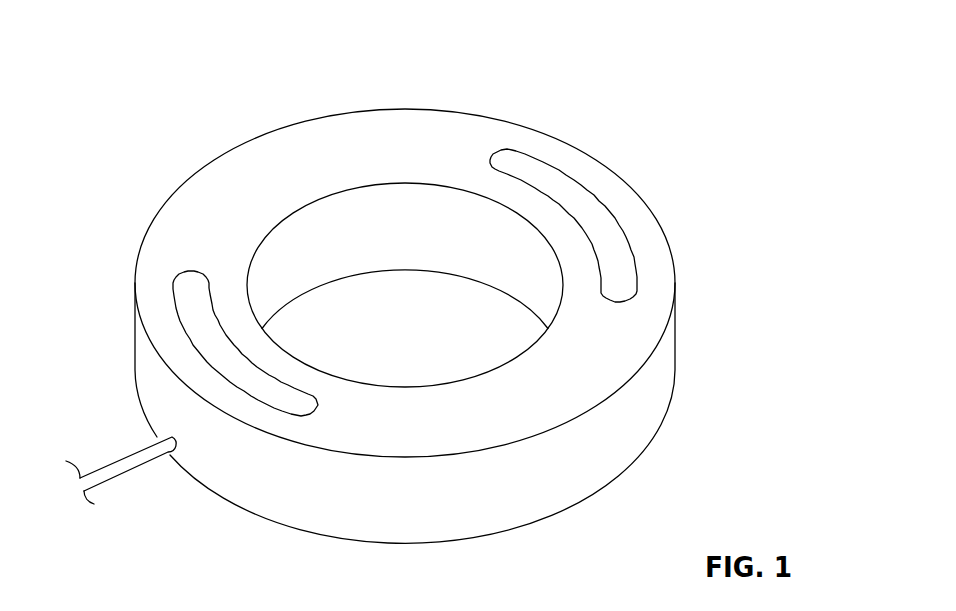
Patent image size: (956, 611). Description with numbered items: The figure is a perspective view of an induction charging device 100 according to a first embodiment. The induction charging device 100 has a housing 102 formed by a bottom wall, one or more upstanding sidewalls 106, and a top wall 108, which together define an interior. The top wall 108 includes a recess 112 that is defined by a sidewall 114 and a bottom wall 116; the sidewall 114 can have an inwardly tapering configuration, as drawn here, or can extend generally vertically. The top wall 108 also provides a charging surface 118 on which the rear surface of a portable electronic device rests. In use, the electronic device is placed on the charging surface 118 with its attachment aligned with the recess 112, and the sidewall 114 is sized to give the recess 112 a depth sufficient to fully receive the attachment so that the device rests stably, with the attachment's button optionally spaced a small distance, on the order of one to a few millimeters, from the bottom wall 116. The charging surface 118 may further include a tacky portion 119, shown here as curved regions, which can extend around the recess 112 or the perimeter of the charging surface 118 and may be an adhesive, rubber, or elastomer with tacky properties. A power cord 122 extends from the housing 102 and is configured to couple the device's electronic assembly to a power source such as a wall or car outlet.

The induction charging device 100 is at (707, 75).
The housing 102 is at (248, 140).
The upstanding sidewalls 106 is at (667, 400).
The top wall 108 is at (660, 270).
The recess 112 is at (397, 215).
The sidewall 114 is at (365, 233).
The bottom wall 116 is at (435, 352).
The charging surface 118 is at (193, 203).
The tacky portion 119 is at (520, 168).
The power cord 122 is at (130, 462).